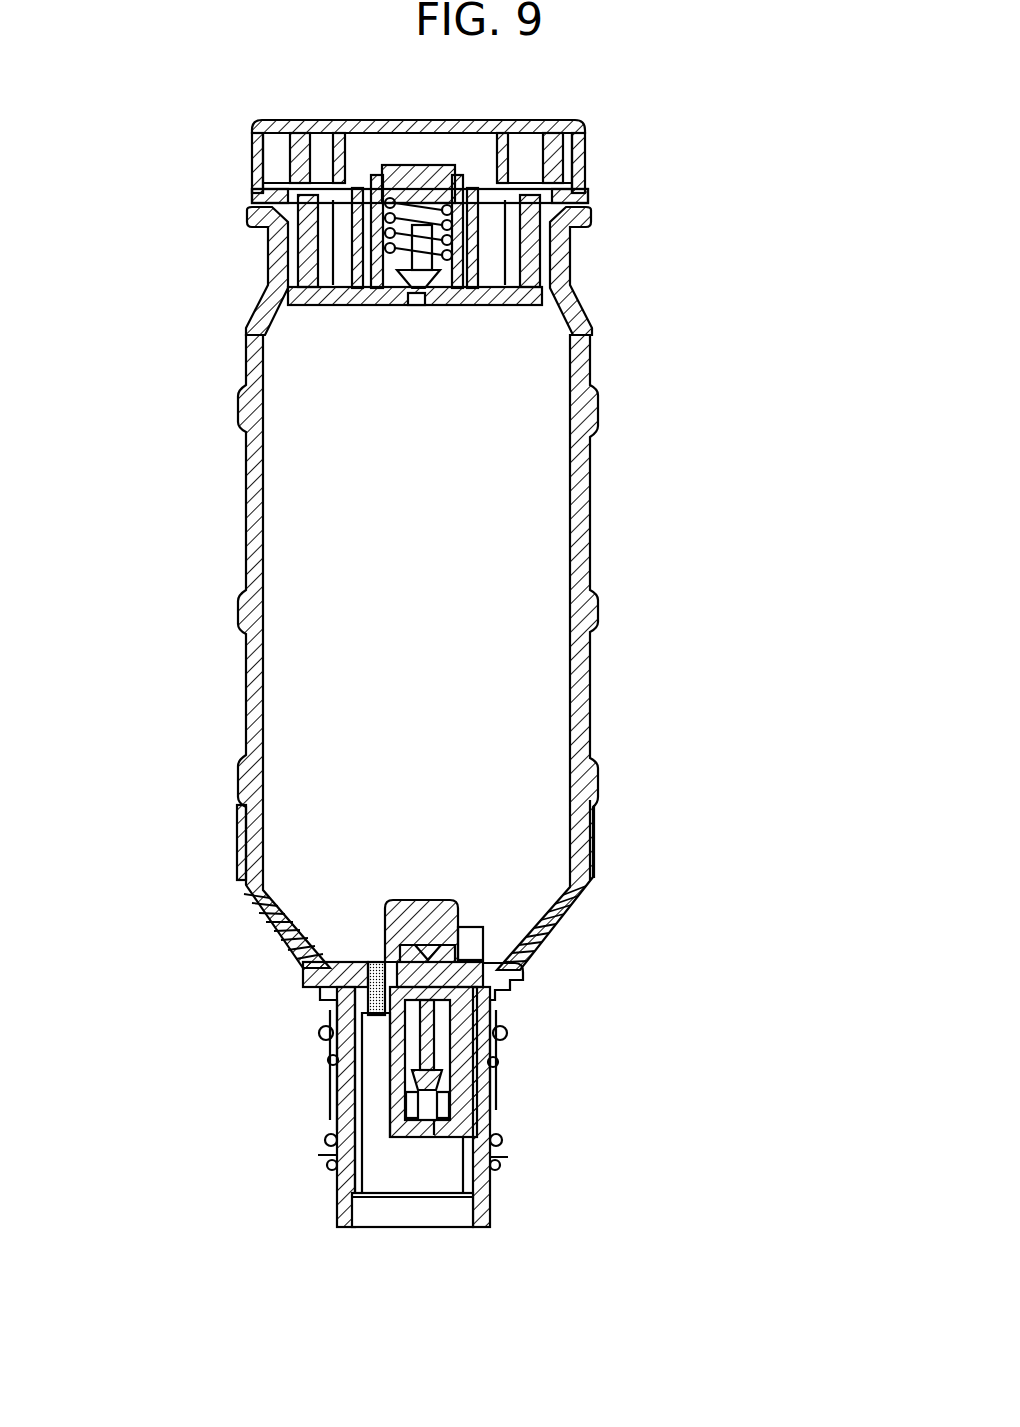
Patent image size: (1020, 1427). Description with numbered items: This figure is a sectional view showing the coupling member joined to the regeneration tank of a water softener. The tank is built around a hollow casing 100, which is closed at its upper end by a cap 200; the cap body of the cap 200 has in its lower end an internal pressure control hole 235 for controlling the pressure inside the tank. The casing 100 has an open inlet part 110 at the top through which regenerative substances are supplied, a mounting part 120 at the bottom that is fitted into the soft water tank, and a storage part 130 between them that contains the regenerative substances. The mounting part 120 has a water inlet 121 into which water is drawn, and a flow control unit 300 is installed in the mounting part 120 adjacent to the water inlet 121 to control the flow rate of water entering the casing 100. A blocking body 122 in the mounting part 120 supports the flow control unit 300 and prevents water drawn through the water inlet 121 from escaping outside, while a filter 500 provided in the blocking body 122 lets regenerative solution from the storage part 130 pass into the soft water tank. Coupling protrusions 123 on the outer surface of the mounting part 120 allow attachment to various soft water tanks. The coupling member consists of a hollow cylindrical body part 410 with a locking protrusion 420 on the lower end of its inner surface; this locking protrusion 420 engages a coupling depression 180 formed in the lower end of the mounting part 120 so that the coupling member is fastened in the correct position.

The casing 100 is at (771, 312).
The open inlet part 110 is at (565, 250).
The mounting part 120 is at (417, 1046).
The water inlet 121 is at (490, 1115).
The blocking body 122 is at (305, 970).
The coupling protrusion 123 is at (513, 1008).
The storage part 130 is at (580, 518).
The coupling depression 180 is at (490, 1173).
The cap 200 is at (582, 203).
The internal pressure control hole 235 is at (415, 306).
The flow control unit 300 is at (508, 1038).
The body part 410 is at (337, 1077).
The locking protrusion 420 is at (367, 1197).
The filter 500 is at (325, 1010).